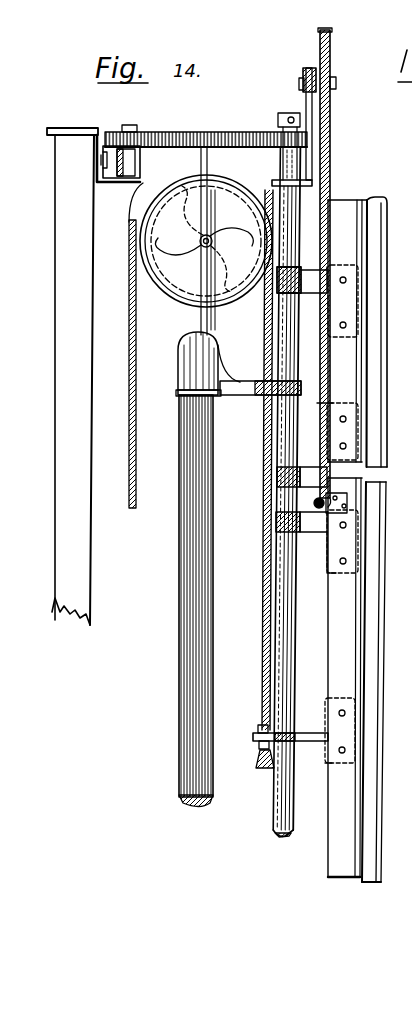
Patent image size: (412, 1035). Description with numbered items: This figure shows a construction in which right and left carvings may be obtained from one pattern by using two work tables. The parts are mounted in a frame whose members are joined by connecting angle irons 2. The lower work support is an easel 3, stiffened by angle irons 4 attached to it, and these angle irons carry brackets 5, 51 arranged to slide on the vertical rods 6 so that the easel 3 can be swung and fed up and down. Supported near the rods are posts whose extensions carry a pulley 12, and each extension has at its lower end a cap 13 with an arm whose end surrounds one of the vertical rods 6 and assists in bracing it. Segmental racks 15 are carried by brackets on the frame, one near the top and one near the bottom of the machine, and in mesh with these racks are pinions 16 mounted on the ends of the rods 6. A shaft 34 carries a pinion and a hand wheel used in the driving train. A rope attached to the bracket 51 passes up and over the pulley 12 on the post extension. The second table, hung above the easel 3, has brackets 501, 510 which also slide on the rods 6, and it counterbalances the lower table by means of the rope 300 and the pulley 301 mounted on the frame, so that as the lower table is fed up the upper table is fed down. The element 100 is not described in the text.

The connecting angle irons 2 is at (55, 465).
The easel 3 is at (388, 428).
The angle irons 4 is at (331, 879).
The bracket 5 is at (305, 270).
The vertical rods 6 is at (298, 346).
The pulley 12 is at (170, 299).
The cap 13 is at (190, 368).
The segmental rack 15 is at (193, 134).
The pinion 16 is at (283, 137).
The shaft 34 is at (130, 418).
The bracket 51 is at (296, 745).
The counterweight rod 100 is at (213, 498).
The rope 300 is at (329, 180).
The pulley 301 is at (331, 127).
The bracket 501 is at (347, 301).
The bracket 510 is at (327, 408).